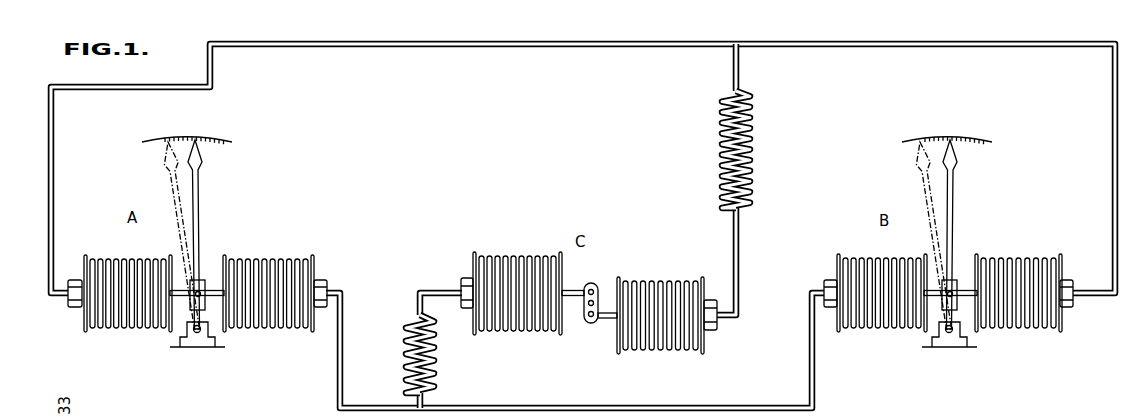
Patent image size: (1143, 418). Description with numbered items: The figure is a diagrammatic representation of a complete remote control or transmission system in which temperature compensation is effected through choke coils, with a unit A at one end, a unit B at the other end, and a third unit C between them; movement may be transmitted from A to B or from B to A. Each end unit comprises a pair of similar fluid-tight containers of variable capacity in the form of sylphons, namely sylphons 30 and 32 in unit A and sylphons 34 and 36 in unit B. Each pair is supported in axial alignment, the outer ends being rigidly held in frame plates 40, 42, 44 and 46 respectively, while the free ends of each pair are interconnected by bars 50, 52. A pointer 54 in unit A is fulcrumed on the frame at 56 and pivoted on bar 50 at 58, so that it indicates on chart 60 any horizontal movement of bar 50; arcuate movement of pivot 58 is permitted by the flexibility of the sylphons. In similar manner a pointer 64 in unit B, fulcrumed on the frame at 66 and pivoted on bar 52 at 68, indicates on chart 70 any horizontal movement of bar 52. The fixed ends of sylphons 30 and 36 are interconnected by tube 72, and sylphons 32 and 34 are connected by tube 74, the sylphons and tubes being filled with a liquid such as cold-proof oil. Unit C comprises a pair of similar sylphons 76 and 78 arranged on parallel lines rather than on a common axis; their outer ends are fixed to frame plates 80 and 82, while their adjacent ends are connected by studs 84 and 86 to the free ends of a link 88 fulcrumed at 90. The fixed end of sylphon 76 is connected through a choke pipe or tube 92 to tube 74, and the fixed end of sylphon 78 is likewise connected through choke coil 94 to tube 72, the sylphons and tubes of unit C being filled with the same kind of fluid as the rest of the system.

The sylphon 30 is at (103, 253).
The sylphon 32 is at (266, 253).
The sylphon 34 is at (868, 251).
The sylphon 36 is at (1016, 251).
The frame plate 40 is at (77, 326).
The frame plate 42 is at (314, 258).
The frame plate 44 is at (828, 258).
The frame plate 46 is at (1060, 327).
The bar 50 is at (201, 284).
The bar 52 is at (954, 284).
The pointer 54 is at (198, 186).
The fulcrum 56 is at (195, 330).
The pivot 58 is at (190, 294).
The chart 60 is at (209, 137).
The pointer 64 is at (952, 191).
The fulcrum 66 is at (946, 330).
The pivot 68 is at (942, 297).
The chart 70 is at (973, 137).
The tube 72 is at (355, 43).
The tube 74 is at (528, 406).
The sylphon 76 is at (490, 251).
The sylphon 78 is at (648, 276).
The frame plate 80 is at (464, 259).
The frame plate 82 is at (699, 348).
The stud 84 is at (568, 289).
The stud 86 is at (601, 318).
The link 88 is at (589, 290).
The fulcrum 90 is at (585, 304).
The choke pipe 92 is at (432, 358).
The choke coil 94 is at (716, 170).